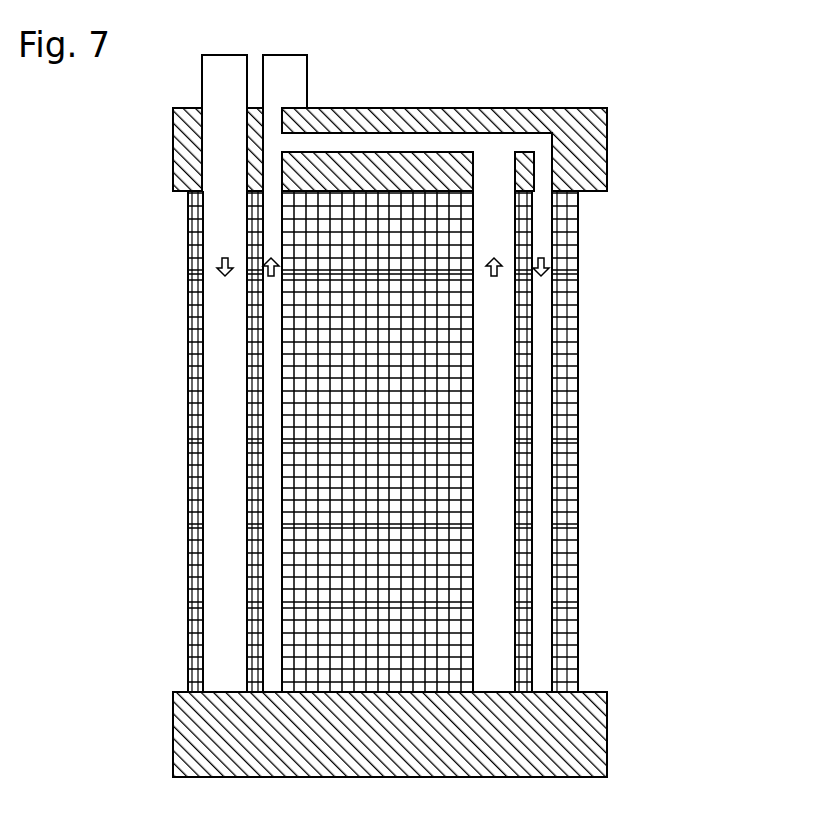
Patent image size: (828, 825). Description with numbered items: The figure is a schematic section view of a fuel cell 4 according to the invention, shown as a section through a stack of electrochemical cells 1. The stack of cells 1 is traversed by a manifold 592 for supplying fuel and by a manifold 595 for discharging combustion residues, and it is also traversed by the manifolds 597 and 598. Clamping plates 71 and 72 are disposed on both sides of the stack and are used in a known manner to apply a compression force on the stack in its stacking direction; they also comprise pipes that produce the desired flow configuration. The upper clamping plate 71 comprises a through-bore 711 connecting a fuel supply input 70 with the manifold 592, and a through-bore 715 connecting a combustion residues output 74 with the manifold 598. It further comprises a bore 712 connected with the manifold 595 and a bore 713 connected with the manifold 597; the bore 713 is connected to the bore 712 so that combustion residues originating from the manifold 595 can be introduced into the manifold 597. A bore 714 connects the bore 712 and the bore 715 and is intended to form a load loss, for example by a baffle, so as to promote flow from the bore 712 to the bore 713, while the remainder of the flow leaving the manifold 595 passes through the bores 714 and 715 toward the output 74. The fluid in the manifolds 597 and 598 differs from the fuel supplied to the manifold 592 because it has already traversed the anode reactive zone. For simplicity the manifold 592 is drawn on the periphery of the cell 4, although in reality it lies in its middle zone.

The fuel cell 4 is at (632, 141).
The fuel supply input 70 is at (202, 79).
The combustion residues output 74 is at (307, 80).
The clamping plate 71 is at (173, 152).
The through-bore 711 is at (173, 150).
The bore 712 is at (497, 170).
The bore 713 is at (545, 167).
The bore 714 is at (441, 131).
The through-bore 715 is at (273, 174).
The electrochemical cell 1 is at (188, 234).
The manifold for supplying fuel 592 is at (241, 359).
The manifold for discharging combustion residues 595 is at (511, 514).
The manifold 597 is at (540, 407).
The manifold 598 is at (274, 467).
The clamping plate 72 is at (173, 737).